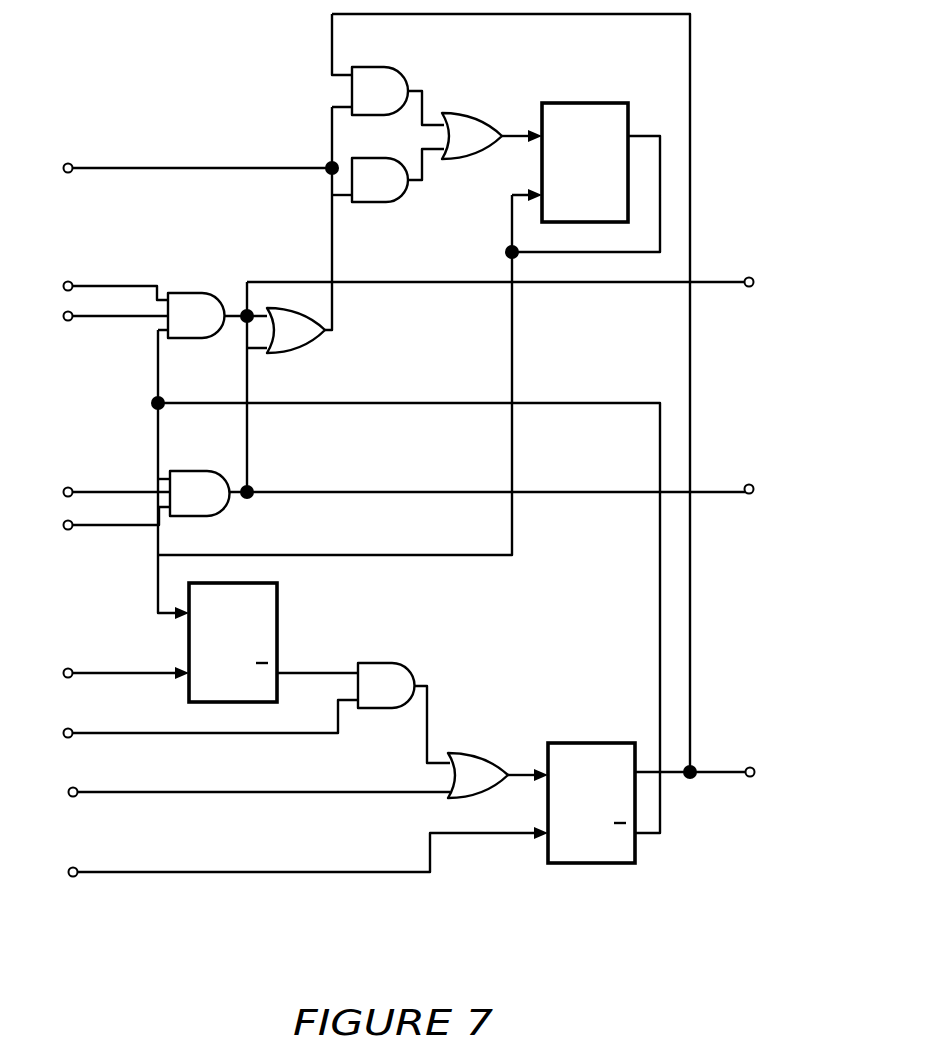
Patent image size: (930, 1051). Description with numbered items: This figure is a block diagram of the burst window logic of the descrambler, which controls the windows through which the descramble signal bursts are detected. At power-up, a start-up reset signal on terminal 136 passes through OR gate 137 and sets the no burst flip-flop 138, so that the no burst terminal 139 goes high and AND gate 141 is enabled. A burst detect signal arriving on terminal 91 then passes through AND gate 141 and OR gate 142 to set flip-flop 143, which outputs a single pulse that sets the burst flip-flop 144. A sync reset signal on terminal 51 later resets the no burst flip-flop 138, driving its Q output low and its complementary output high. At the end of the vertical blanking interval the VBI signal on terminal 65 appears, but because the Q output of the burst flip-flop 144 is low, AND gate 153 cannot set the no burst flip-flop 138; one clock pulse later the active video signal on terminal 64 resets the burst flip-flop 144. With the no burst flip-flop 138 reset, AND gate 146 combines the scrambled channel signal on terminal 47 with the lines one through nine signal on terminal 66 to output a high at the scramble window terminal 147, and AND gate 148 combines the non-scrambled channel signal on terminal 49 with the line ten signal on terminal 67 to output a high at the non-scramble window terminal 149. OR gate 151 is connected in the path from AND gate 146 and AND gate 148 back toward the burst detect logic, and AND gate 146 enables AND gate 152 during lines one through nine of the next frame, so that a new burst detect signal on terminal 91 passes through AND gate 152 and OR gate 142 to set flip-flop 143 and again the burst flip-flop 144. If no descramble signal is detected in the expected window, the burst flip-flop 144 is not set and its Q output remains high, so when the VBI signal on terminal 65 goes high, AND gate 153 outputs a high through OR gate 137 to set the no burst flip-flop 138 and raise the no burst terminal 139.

The burst detect terminal 91 is at (63, 173).
The scrambled channel terminal 47 is at (63, 286).
The horizontal lines 1-9 terminal 66 is at (63, 316).
The non-scrambled channel terminal 49 is at (63, 492).
The horizontal line 10 terminal 67 is at (63, 525).
The active video terminal 64 is at (63, 673).
The VBI terminal 65 is at (63, 733).
The start-up reset terminal 136 is at (69, 795).
The sync reset terminal 51 is at (68, 872).
The AND gate 141 is at (405, 75).
The AND gate 152 is at (385, 203).
The OR gate 142 is at (480, 118).
The flip-flop 143 is at (596, 103).
The AND gate 146 is at (210, 293).
The OR gate 151 is at (314, 346).
The AND gate 148 is at (212, 471).
The burst flip-flop 144 is at (278, 640).
The AND gate 153 is at (410, 672).
The OR gate 137 is at (487, 755).
The no burst flip-flop 138 is at (548, 809).
The scramble window terminal 147 is at (752, 277).
The non-scramble window terminal 149 is at (752, 484).
The no burst terminal 139 is at (753, 767).